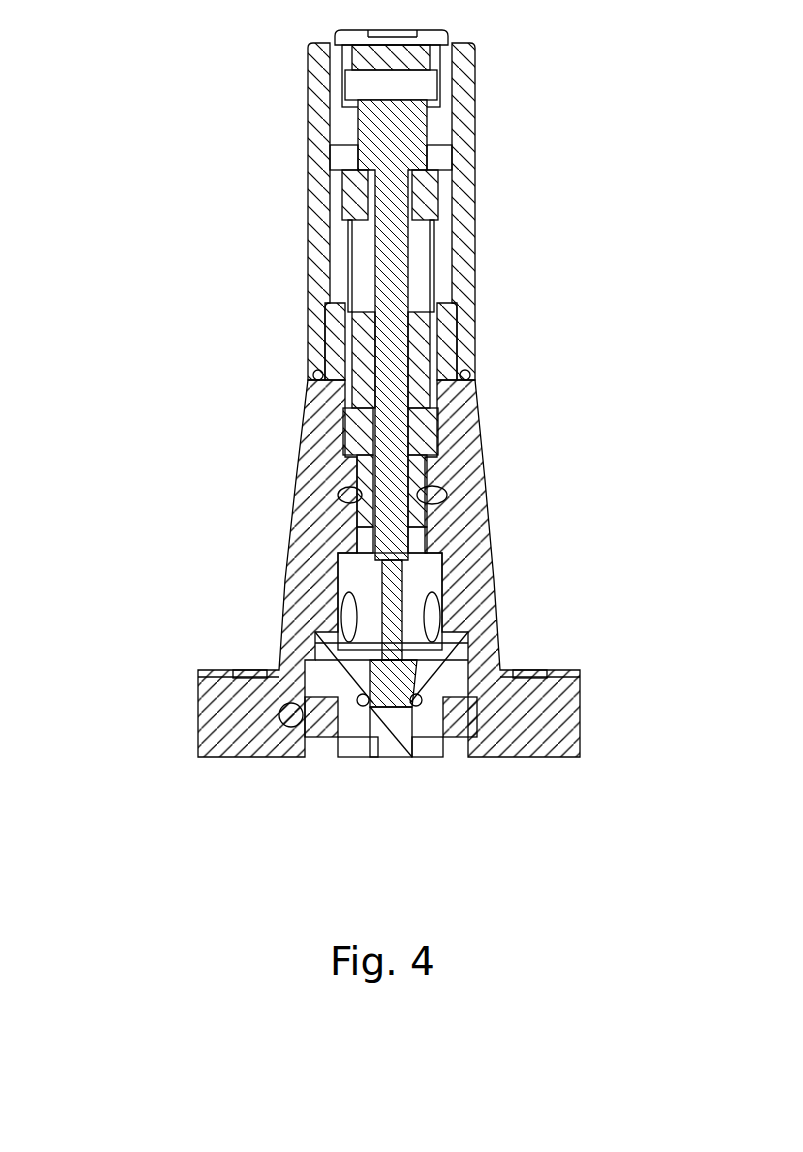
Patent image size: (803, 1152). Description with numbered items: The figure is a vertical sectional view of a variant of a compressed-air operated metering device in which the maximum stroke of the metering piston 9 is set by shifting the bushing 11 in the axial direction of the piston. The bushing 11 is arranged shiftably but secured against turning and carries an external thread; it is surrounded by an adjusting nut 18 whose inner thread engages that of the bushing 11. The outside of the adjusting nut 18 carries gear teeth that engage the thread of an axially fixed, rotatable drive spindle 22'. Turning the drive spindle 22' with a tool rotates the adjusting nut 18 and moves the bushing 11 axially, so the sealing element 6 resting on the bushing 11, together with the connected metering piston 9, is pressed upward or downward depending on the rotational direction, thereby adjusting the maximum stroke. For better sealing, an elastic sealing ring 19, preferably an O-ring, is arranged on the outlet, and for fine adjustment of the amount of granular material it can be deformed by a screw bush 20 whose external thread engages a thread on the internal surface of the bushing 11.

The sealing element 6 is at (500, 608).
The metering piston 9 is at (397, 507).
The bushing 11 is at (345, 715).
The adjusting nut 18 is at (302, 727).
The sealing ring 19 is at (400, 715).
The screw bush 20 is at (357, 703).
The drive spindle 22' is at (174, 644).